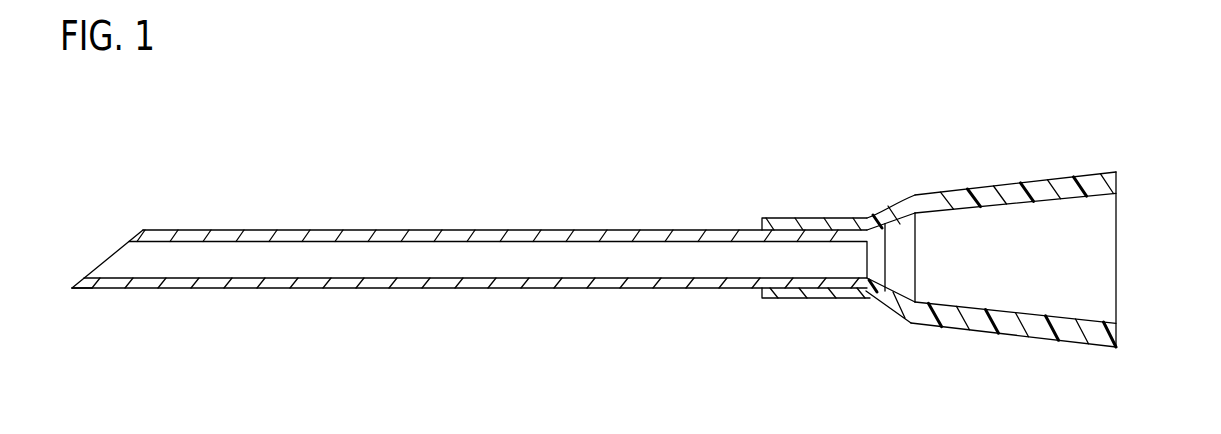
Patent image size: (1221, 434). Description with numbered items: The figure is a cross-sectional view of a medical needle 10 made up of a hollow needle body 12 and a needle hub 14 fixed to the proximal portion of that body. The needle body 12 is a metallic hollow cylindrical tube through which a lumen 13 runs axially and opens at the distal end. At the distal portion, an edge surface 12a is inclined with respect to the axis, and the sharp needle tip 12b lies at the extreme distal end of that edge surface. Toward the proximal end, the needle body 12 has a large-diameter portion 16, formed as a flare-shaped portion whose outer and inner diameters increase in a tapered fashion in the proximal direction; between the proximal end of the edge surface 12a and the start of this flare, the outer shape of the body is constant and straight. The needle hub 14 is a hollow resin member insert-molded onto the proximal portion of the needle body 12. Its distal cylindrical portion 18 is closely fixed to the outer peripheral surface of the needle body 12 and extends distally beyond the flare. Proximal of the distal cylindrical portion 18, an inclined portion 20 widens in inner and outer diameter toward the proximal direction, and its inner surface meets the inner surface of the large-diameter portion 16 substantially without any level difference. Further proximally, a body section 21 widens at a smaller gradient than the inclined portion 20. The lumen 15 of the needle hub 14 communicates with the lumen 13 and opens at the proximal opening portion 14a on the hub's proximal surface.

The medical needle 10 is at (440, 138).
The needle body 12 is at (294, 226).
The edge surface 12a is at (105, 258).
The needle tip 12b is at (72, 290).
The lumen 13 is at (418, 264).
The needle hub 14 is at (1059, 173).
The proximal opening portion 14a is at (1117, 259).
The lumen of the needle hub 15 is at (962, 232).
The large-diameter portion 16 is at (873, 227).
The distal cylindrical portion 18 is at (803, 292).
The inclined portion 20 is at (881, 310).
The body section 21 is at (1013, 326).